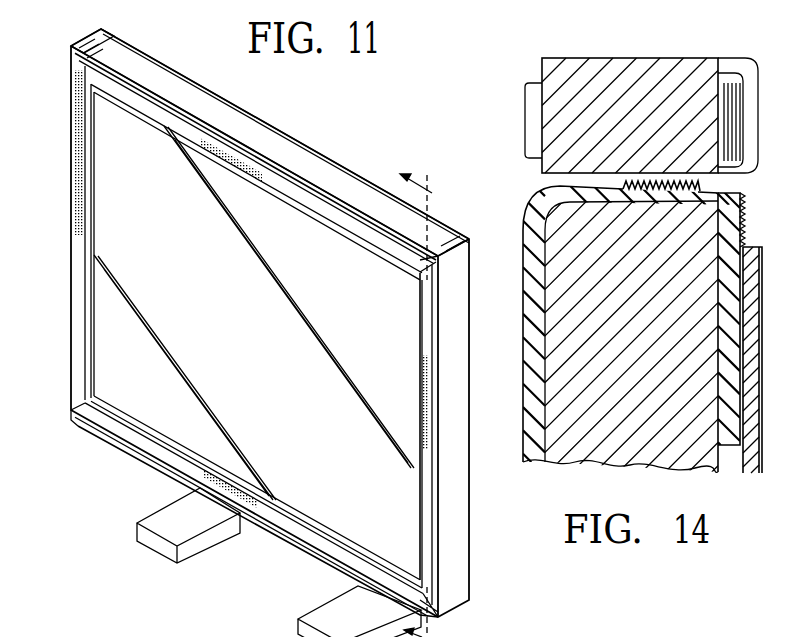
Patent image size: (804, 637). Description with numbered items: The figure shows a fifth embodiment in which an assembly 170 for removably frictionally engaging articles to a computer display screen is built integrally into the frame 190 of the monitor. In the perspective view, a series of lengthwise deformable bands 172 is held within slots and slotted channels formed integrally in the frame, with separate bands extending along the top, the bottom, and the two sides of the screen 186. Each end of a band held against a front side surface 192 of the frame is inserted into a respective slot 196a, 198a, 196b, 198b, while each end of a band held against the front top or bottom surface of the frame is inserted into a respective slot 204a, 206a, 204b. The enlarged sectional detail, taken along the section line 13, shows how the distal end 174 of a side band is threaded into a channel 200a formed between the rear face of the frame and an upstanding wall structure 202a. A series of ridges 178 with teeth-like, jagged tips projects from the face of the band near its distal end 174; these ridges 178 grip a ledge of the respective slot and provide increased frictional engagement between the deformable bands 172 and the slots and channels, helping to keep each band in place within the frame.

In FIG. 11, the assembly 170 is at (263, 101).
In FIG. 11, the frame 190 is at (342, 187).
In FIG. 11, the deformable band 172 is at (78, 307).
In FIG. 11, the display panel 186 is at (127, 180).
In FIG. 11, the slot 196a is at (82, 70).
In FIG. 11, the slot 196b is at (440, 280).
In FIG. 11, the slot 204a is at (105, 58).
In FIG. 11, the slot 204b is at (92, 418).
In FIG. 11, the front side surface 192 is at (88, 54).
In FIG. 11, the slot 206a is at (433, 252).
In FIG. 11, the slot 198a is at (82, 410).
In FIG. 11, the slot 198b is at (425, 595).
In FIG. 11, the section line for FIG. 13 is at (432, 405).
In FIG. 14, the upstanding wall structure 202a is at (750, 297).
In FIG. 14, the distal end 174 is at (727, 403).
In FIG. 14, the ridges 178 is at (740, 205).
In FIG. 14, the channel 200a is at (730, 460).